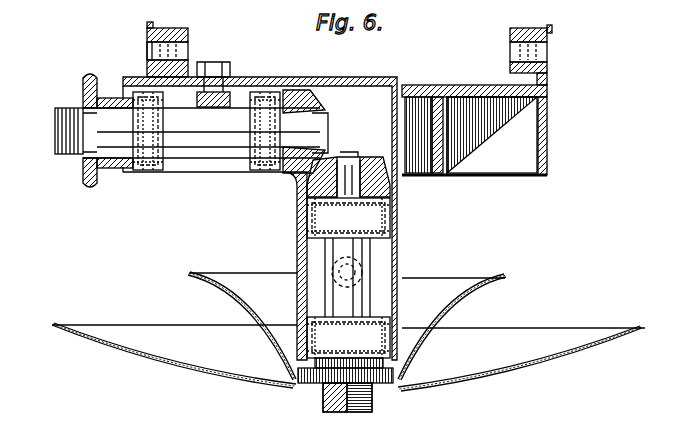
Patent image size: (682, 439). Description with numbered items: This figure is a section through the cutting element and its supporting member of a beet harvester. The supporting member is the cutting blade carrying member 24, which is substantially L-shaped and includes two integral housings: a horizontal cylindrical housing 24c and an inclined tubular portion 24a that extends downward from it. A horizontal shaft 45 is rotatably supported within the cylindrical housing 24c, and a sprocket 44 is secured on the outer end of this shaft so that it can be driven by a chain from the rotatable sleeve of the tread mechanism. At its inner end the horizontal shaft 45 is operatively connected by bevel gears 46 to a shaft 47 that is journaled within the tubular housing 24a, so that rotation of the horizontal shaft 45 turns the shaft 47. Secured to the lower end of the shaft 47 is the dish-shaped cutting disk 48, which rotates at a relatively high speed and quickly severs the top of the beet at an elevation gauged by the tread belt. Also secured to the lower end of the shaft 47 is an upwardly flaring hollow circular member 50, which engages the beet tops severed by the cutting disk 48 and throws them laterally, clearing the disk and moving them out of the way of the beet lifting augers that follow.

The cutting blade carrying member 24 is at (403, 81).
The inclined tubular portion 24a is at (299, 256).
The cylindrical housing 24c is at (336, 70).
The sprocket 44 is at (84, 179).
The horizontal shaft 45 is at (56, 138).
The bevel gears 46 is at (368, 152).
The shaft 47 is at (365, 273).
The dish-shaped cutting disk 48 is at (539, 331).
The upwardly flaring hollow circular member 50 is at (476, 278).